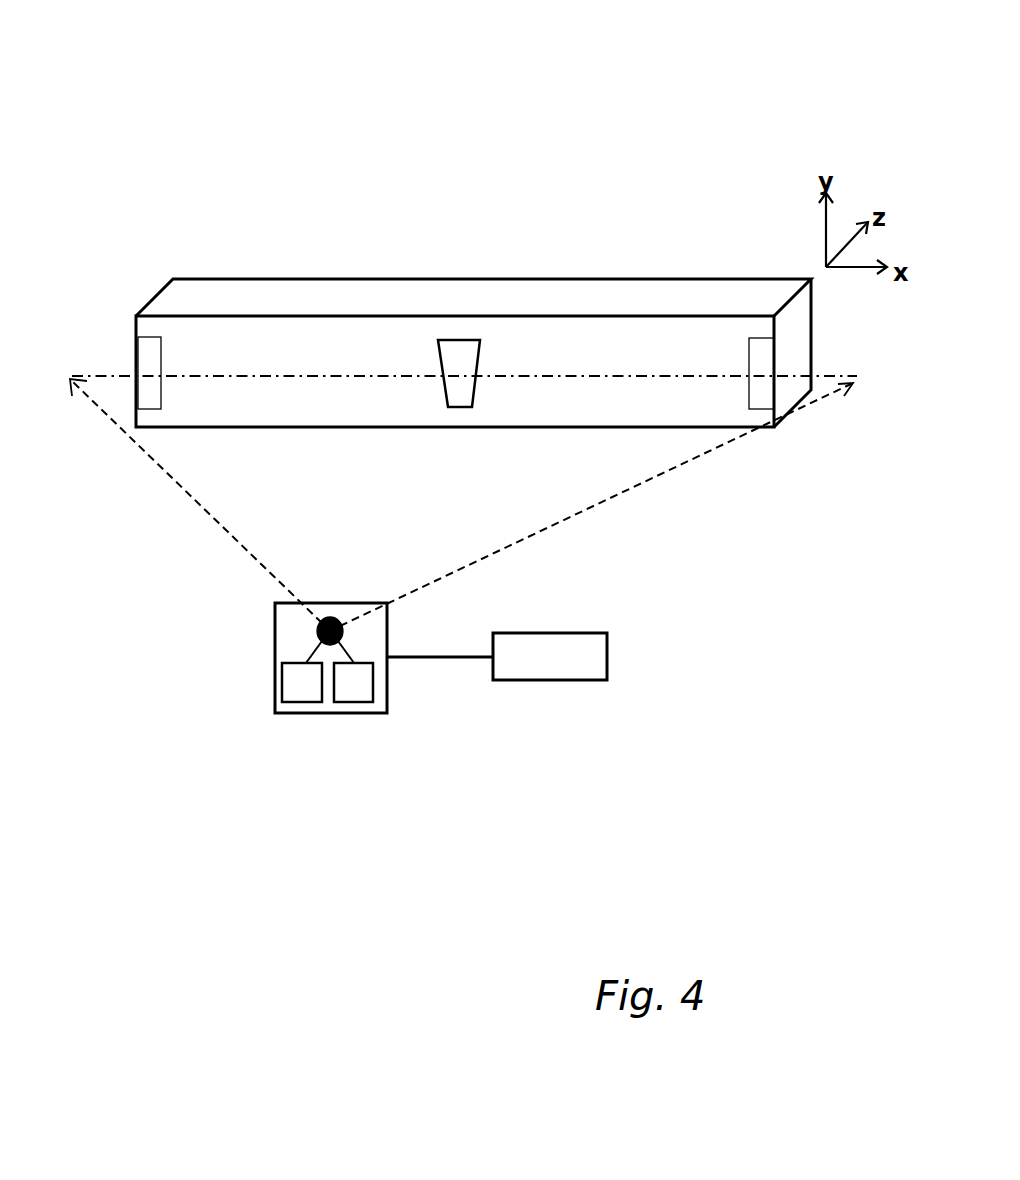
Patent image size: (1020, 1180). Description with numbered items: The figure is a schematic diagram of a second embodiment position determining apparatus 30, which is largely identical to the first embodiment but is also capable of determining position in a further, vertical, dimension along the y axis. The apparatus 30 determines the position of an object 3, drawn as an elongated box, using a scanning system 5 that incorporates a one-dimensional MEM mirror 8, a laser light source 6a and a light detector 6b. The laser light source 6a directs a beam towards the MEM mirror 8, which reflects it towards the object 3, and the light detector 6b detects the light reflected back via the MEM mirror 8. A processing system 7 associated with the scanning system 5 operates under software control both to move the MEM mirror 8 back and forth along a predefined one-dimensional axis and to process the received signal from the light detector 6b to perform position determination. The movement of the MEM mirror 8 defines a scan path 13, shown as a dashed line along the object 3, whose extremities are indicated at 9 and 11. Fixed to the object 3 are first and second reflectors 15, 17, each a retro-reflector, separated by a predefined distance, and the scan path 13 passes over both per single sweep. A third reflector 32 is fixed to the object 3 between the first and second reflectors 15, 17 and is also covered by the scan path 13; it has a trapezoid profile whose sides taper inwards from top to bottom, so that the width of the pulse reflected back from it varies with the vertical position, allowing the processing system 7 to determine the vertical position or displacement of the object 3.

The second embodiment apparatus 30 is at (212, 78).
The object 3 is at (273, 290).
The first reflector 15 is at (141, 357).
The second reflector 17 is at (768, 403).
The third reflector 32 is at (462, 340).
The scan path 13 is at (623, 375).
The extremity of the scan path 9 is at (165, 473).
The extremity of the scan path 11 is at (600, 500).
The scanning system 5 is at (388, 682).
The MEM mirror 8 is at (352, 602).
The laser light source 6a is at (288, 678).
The light detector 6b is at (360, 697).
The processing system 7 is at (572, 670).